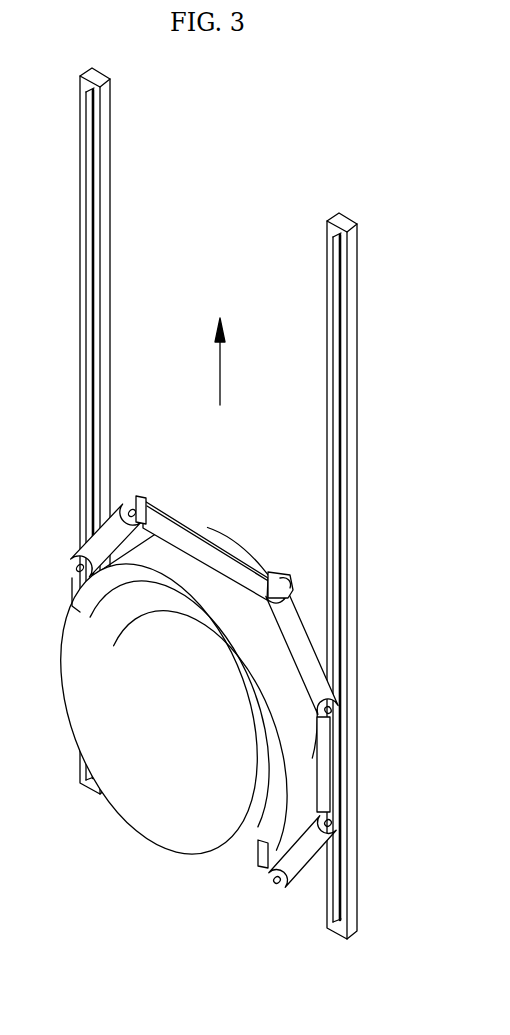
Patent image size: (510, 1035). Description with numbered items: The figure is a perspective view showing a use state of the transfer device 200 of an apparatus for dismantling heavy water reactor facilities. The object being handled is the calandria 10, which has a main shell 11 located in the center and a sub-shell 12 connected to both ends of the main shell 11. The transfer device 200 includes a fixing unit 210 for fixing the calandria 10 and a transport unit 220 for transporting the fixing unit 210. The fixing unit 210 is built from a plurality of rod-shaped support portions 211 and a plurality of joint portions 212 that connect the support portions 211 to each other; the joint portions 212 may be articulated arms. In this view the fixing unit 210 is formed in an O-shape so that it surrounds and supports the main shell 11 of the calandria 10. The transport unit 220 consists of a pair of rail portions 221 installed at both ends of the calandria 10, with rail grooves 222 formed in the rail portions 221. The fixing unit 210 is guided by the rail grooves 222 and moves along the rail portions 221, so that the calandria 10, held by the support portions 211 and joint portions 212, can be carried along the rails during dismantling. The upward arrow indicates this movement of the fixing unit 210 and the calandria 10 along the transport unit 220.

The calandria 10 is at (237, 705).
The main shell 11 is at (302, 738).
The sub-shell 12 is at (245, 797).
The transfer device 200 is at (241, 503).
The fixing unit 210 is at (205, 659).
The support portion 211 is at (213, 553).
The joint portion 212 is at (268, 578).
The transport unit 220 is at (269, 503).
The rail portion 221 is at (351, 486).
The rail groove 222 is at (420, 497).